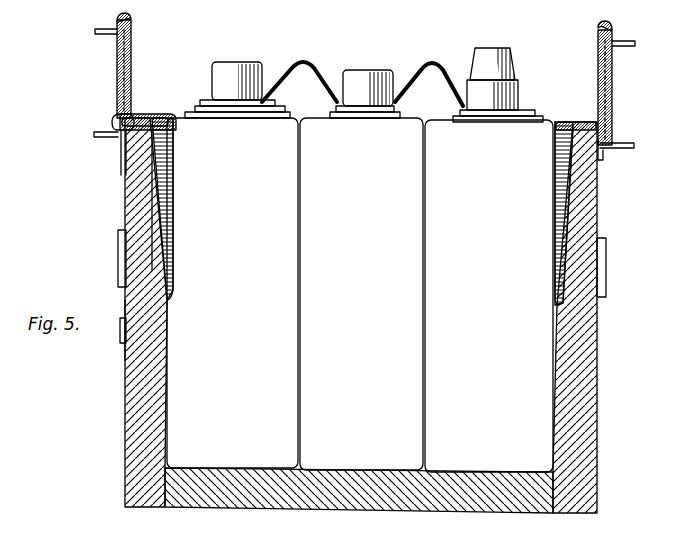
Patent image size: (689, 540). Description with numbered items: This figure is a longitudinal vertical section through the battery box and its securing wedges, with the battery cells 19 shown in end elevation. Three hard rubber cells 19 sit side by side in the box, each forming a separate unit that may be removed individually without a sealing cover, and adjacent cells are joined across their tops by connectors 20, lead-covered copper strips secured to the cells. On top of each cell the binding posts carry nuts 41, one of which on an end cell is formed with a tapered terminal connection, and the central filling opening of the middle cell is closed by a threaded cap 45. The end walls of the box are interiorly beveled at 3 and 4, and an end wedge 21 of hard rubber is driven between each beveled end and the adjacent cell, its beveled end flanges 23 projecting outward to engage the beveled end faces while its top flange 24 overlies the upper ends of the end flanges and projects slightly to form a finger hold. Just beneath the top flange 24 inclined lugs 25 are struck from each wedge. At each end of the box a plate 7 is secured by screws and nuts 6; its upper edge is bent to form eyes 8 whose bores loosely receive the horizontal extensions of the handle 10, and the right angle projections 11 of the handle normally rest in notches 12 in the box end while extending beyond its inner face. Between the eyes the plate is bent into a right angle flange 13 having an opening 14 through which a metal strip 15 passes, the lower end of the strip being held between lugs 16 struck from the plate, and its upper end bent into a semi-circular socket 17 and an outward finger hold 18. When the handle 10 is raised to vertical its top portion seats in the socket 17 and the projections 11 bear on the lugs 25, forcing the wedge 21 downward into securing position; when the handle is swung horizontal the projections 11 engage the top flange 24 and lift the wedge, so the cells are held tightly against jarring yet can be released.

The beveled end wall 3 is at (162, 384).
The beveled end wall 4 is at (560, 374).
The nut 6 is at (120, 326).
The plate 7 is at (124, 352).
The eye 8 is at (112, 122).
The handle 10 is at (133, 55).
The right angle projection 11 is at (147, 114).
The notch 12 is at (128, 152).
The right angle flange 13 is at (96, 138).
The opening 14 is at (606, 152).
The metal strip 15 is at (118, 90).
The lug 16 is at (118, 268).
The semi-circular socket 17 is at (132, 28).
The finger hold 18 is at (100, 38).
The cell 19 is at (360, 295).
The connector 20 is at (306, 63).
The end wedge 21 is at (175, 222).
The beveled end flange 23 is at (165, 240).
The top flange 24 is at (160, 113).
The inclined lug 25 is at (175, 152).
The nut 41 is at (248, 66).
The cap 45 is at (362, 70).